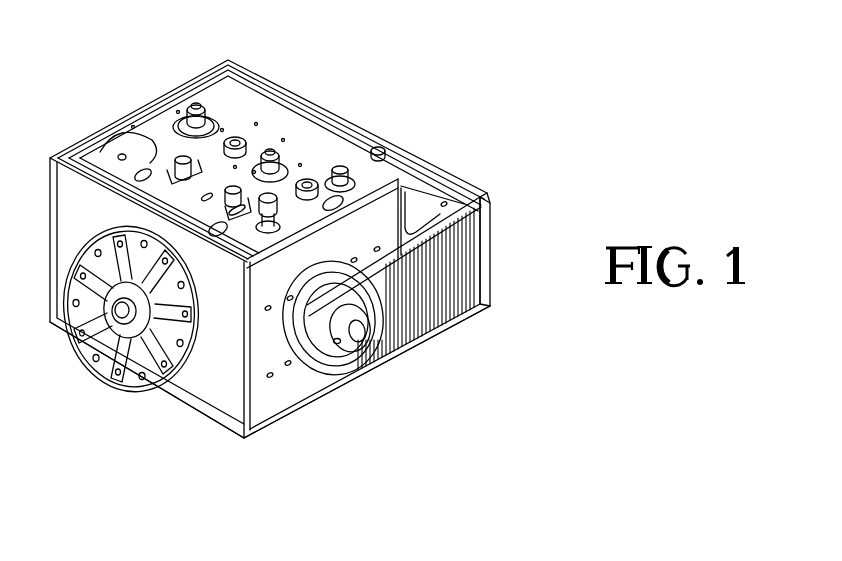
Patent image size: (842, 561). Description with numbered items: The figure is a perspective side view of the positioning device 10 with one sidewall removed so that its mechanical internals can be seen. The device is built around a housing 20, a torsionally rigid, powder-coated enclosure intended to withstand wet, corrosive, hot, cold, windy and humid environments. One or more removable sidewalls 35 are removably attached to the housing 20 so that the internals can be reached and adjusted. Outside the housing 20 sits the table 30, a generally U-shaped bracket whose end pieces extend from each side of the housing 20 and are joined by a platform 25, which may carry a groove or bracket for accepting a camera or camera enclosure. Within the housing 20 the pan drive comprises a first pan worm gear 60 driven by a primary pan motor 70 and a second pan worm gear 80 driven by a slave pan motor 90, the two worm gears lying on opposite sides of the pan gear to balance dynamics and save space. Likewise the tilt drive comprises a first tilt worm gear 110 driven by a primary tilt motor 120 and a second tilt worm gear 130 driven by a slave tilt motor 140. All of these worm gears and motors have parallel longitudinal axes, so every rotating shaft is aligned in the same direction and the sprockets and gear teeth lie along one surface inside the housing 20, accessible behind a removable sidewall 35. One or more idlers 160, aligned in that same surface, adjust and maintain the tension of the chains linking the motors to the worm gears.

The positioning device 10 is at (486, 121).
The housing 20 is at (289, 392).
The platform 25 is at (485, 195).
The table 30 is at (437, 318).
The removable sidewall 35 is at (350, 383).
The first pan worm gear 60 is at (98, 142).
The primary pan motor 70 is at (194, 108).
The second pan worm gear 80 is at (213, 225).
The slave pan motor 90 is at (238, 142).
The first tilt worm gear 110 is at (340, 212).
The primary tilt motor 120 is at (307, 183).
The second tilt worm gear 130 is at (238, 244).
The slave tilt motor 140 is at (341, 170).
The idler 160 is at (180, 157).